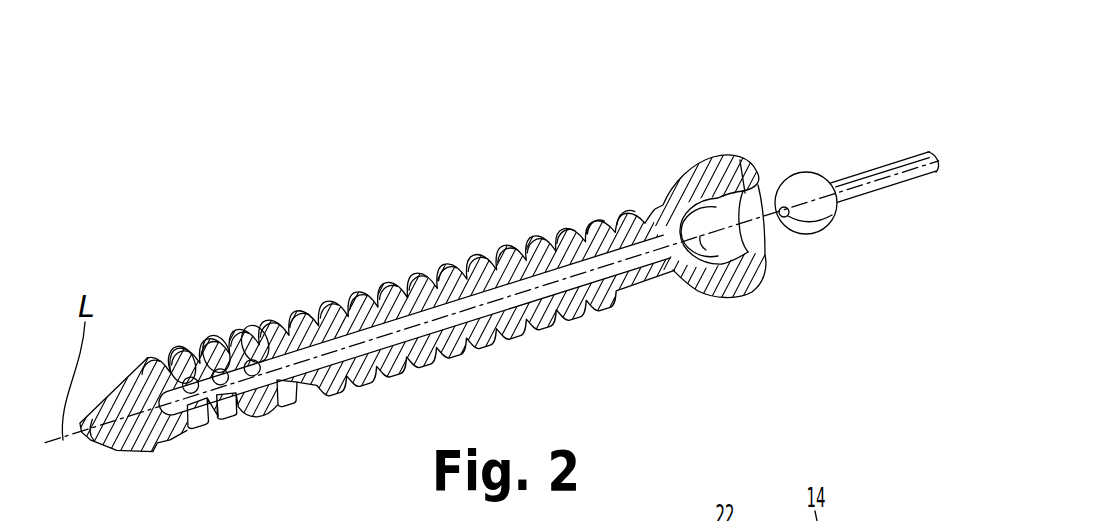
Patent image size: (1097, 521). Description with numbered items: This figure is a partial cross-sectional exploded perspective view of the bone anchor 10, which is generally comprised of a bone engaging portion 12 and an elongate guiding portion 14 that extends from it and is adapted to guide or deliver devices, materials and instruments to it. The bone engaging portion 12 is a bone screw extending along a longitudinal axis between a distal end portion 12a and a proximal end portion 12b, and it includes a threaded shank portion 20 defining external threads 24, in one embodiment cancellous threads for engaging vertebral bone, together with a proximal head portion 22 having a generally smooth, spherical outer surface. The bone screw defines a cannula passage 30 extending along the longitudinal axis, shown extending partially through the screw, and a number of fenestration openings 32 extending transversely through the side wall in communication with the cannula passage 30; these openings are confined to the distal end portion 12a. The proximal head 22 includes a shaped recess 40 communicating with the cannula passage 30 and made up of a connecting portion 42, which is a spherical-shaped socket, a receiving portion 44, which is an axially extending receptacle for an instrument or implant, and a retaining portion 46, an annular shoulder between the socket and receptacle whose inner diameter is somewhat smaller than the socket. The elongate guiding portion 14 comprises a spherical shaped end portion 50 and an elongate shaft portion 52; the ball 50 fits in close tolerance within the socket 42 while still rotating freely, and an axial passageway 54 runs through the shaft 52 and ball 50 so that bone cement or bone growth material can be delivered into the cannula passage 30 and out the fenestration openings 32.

The bone anchor 10 is at (548, 62).
The bone engaging portion 12 is at (398, 214).
The distal end portion 12a is at (128, 411).
The proximal end portion 12b is at (720, 305).
The elongate guiding portion 14 is at (912, 130).
The threaded shank portion 20 is at (413, 322).
The proximal head portion 22 is at (712, 140).
The external threads 24 is at (388, 292).
The cannula passage 30 is at (413, 326).
The fenestration openings 32 is at (195, 456).
The shaped recess 40 is at (756, 229).
The connecting portion 42 is at (700, 255).
The receiving portion 44 is at (741, 244).
The retaining portion 46 is at (740, 172).
The shaped end portion 50 is at (812, 172).
The elongate shaft portion 52 is at (890, 206).
The axial passageway 54 is at (792, 215).